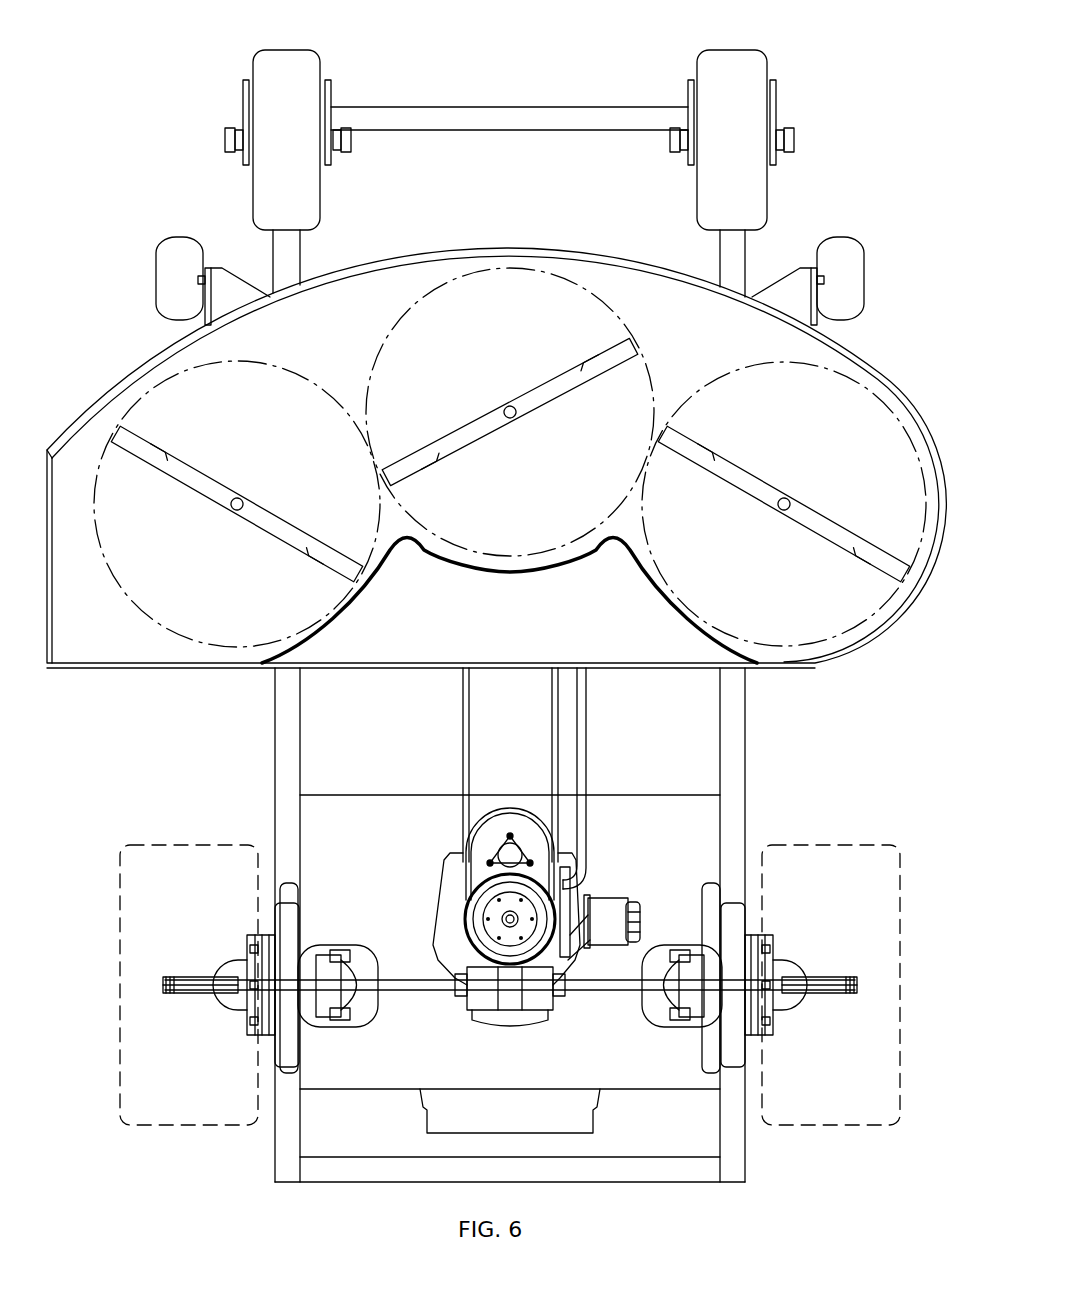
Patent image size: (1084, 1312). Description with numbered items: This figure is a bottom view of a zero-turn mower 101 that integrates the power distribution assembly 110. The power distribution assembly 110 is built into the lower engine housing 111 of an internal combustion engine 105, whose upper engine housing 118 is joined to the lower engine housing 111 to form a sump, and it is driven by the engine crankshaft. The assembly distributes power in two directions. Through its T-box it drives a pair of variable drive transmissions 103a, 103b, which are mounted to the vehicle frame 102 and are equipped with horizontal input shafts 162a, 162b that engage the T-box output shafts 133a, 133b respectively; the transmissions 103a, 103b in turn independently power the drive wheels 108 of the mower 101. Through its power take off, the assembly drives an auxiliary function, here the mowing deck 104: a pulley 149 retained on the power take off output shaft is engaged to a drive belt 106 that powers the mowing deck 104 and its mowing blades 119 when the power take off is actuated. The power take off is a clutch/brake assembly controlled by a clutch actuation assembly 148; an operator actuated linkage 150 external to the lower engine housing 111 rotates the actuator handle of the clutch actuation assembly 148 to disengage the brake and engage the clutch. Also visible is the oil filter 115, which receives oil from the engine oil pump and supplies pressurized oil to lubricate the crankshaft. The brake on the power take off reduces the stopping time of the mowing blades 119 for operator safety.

The zero-turn mower 101 is at (466, 187).
The vehicle frame 102 is at (745, 750).
The variable drive transmission 103a is at (783, 972).
The variable drive transmission 103b is at (231, 972).
The mowing deck 104 is at (510, 253).
The internal combustion engine 105 is at (661, 1119).
The drive belt 106 is at (463, 751).
The drive wheels 108 is at (120, 1110).
The power distribution assembly 110 is at (439, 917).
The lower engine housing 111 is at (448, 880).
The oil filter 115 is at (608, 898).
The upper engine housing 118 is at (530, 1120).
The mowing blades 119 is at (208, 478).
The output shaft 133a is at (558, 1000).
The output shaft 133b is at (466, 1000).
The clutch actuation assembly 148 is at (600, 960).
The pulley 149 is at (470, 940).
The operator actuated linkage 150 is at (588, 733).
The horizontal input shaft 162a is at (616, 1002).
The horizontal input shaft 162b is at (405, 1002).